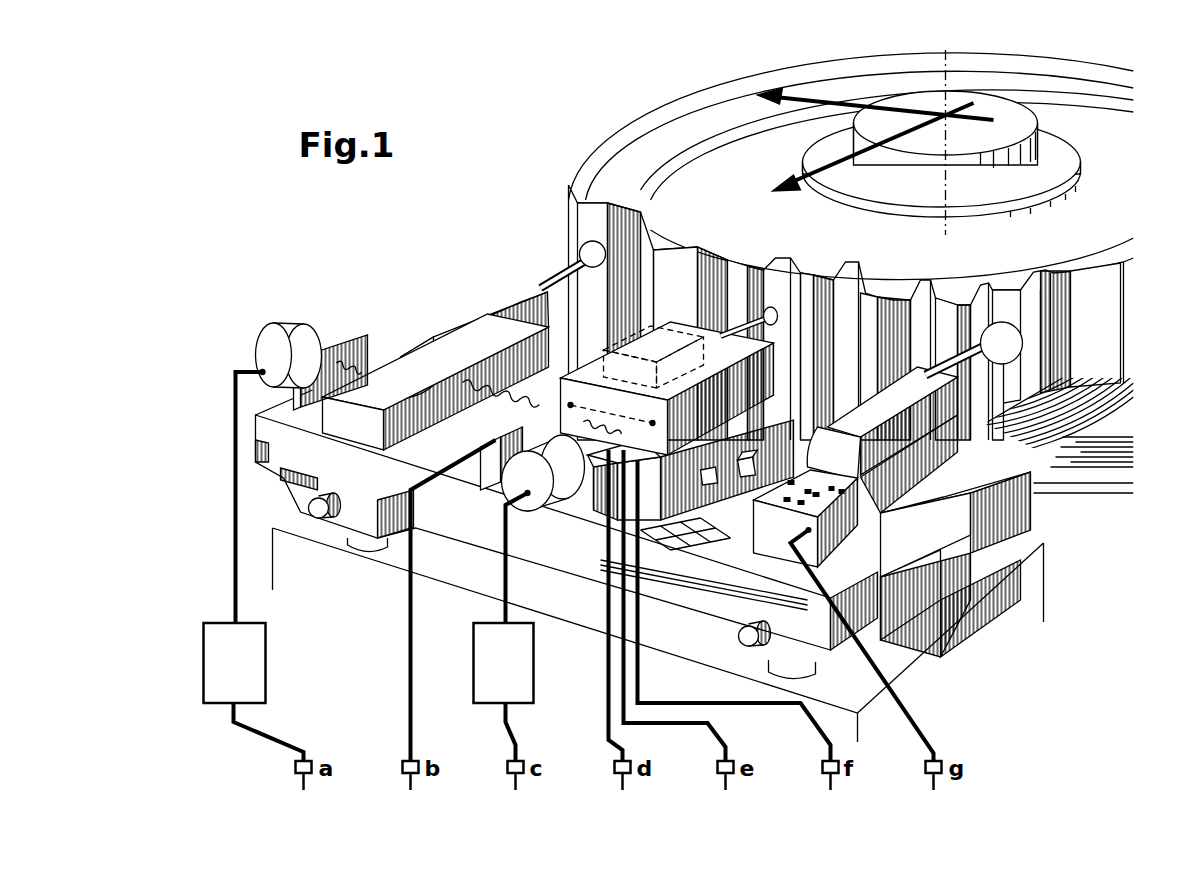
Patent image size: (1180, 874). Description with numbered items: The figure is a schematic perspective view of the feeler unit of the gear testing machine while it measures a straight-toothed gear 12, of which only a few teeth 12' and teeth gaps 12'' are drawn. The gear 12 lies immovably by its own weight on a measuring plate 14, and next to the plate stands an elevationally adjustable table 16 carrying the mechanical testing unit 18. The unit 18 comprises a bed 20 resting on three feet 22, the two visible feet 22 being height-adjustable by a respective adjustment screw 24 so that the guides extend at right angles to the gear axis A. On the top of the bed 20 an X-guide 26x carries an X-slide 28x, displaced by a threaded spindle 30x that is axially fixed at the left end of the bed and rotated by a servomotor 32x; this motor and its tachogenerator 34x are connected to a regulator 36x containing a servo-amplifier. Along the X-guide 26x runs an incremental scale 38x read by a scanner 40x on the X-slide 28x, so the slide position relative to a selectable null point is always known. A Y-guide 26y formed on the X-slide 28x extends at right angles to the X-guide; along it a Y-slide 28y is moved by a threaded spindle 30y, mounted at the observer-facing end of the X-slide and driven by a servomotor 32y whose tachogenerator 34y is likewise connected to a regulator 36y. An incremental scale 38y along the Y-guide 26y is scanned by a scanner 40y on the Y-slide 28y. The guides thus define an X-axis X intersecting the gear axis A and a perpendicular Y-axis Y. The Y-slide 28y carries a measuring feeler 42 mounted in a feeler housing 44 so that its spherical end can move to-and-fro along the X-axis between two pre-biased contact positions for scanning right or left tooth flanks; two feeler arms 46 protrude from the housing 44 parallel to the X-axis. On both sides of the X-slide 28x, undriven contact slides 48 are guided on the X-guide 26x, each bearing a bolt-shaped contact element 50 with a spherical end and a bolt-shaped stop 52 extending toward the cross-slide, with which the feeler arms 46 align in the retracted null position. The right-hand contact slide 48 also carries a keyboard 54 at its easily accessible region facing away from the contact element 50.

The straight-toothed gear 12 is at (825, 126).
The teeth 12' is at (887, 198).
The teeth gaps 12'' is at (816, 245).
The measuring plate 14 is at (1103, 470).
The elevationally adjustable table 16 is at (1035, 587).
The testing or feeler unit 18 is at (390, 263).
The bed 20 is at (963, 593).
The feet 22 is at (363, 545).
The adjustment screw 24 is at (316, 518).
The X-guide 26x is at (960, 492).
The Y-guide 26y is at (600, 487).
The X-slide 28x is at (493, 481).
The Y-slide 28y is at (600, 372).
The threaded spindle 30x is at (398, 390).
The threaded spindle 30y is at (618, 440).
The servomotor 32x is at (310, 350).
The servomotor 32y is at (548, 533).
The tachogenerator 34x is at (272, 338).
The tachogenerator 34y is at (497, 473).
The regulator 36x is at (258, 655).
The regulator 36y is at (525, 673).
The incremental scale 38x is at (716, 485).
The incremental scale 38y is at (683, 447).
The scanner 40x is at (745, 477).
The scanner 40y is at (650, 362).
The measuring feeler 42 is at (767, 270).
The feeler housing 44 is at (704, 338).
The feeler arms 46 is at (675, 350).
The contact slide 48 is at (945, 627).
The contact element 50 is at (580, 252).
The bolt-shaped stop 52 is at (490, 330).
The keyboard 54 is at (807, 507).
The gear axis A is at (947, 144).
The X-axis X is at (876, 112).
The Y-axis Y is at (861, 162).